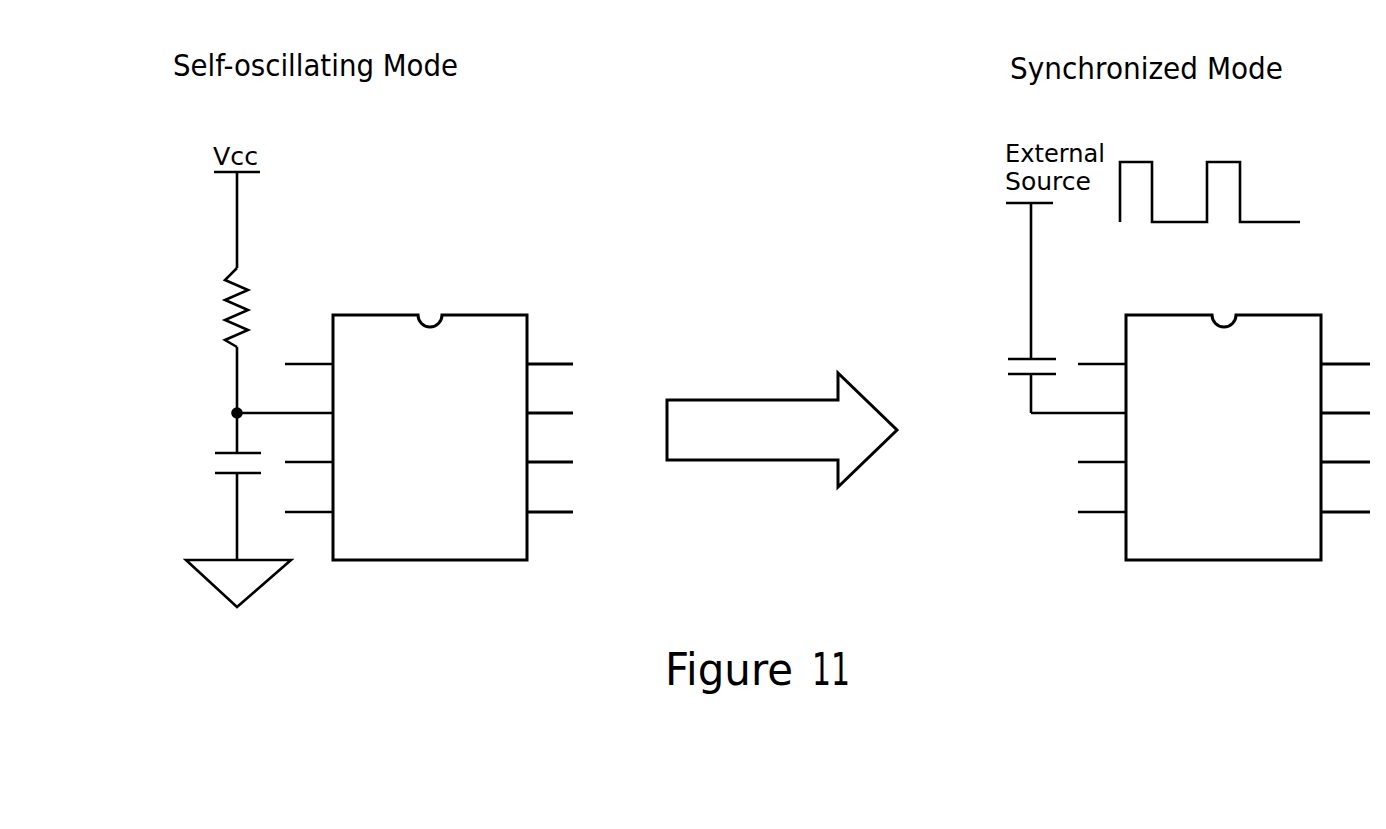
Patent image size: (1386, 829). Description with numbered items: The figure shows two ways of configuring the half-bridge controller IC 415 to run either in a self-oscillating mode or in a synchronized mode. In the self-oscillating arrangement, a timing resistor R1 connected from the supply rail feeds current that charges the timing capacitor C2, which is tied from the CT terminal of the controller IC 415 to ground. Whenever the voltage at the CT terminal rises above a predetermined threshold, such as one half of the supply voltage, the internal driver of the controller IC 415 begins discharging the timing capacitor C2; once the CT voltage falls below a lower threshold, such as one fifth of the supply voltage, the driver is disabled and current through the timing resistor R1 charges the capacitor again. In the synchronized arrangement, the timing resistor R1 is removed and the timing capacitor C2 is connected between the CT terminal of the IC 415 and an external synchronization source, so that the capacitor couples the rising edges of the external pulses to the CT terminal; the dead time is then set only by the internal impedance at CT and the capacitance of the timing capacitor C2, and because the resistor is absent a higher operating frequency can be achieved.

The half-bridge controller IC 415 is at (510, 548).
The timing resistor R1 is at (258, 307).
The timing capacitor C2 is at (614, 417).